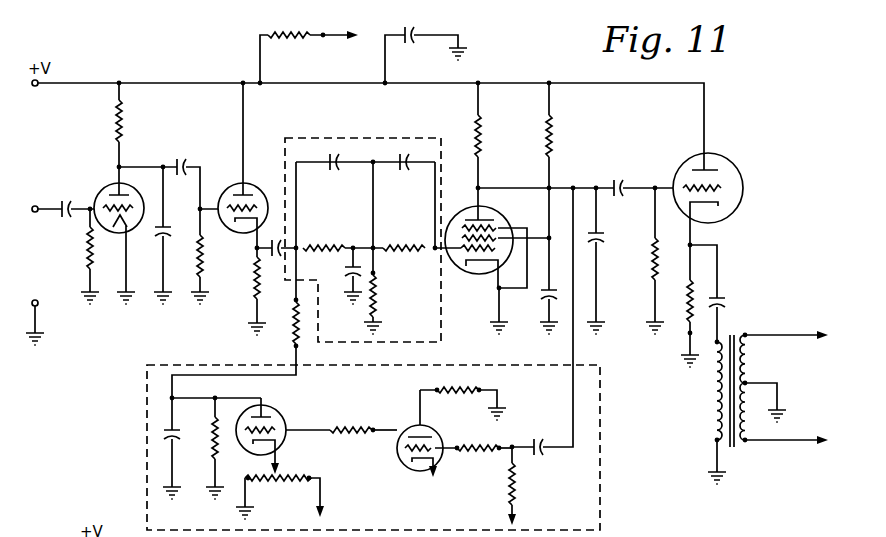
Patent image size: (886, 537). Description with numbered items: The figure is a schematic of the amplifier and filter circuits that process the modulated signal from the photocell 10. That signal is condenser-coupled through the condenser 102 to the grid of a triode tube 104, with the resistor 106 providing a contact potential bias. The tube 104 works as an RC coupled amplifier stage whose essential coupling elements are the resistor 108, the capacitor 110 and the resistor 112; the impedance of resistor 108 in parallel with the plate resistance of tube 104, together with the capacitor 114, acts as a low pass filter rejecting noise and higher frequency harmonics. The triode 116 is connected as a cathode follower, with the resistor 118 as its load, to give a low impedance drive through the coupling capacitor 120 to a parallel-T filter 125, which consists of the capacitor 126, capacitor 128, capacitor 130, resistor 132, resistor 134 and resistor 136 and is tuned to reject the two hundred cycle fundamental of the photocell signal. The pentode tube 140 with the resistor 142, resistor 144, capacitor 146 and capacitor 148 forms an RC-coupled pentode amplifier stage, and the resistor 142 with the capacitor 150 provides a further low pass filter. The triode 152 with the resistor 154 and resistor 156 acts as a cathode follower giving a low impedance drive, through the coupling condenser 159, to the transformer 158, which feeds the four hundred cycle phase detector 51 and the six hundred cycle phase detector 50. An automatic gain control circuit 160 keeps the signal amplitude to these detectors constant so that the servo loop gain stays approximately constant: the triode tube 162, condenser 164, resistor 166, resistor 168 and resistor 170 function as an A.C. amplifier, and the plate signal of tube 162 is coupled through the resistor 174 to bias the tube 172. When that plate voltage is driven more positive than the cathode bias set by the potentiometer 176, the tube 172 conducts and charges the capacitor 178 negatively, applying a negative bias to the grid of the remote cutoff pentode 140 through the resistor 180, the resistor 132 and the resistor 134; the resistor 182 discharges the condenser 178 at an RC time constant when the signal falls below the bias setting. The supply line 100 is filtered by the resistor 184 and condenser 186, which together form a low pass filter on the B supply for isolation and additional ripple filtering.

The photocell 10 is at (55, 191).
The positive supply line 100 is at (125, 78).
The condenser 102 is at (68, 219).
The triode tube 104 is at (124, 190).
The resistor 106 is at (88, 258).
The resistor 108 is at (122, 118).
The capacitor 110 is at (180, 163).
The resistor 112 is at (203, 262).
The capacitor 114 is at (160, 239).
The triode 116 is at (231, 192).
The resistor 118 is at (255, 285).
The capacitor 120 is at (270, 215).
The parallel-T filter 125 is at (349, 138).
The capacitor 126 is at (331, 171).
The capacitor 128 is at (400, 171).
The capacitor 130 is at (346, 270).
The resistor 132 is at (316, 244).
The resistor 134 is at (402, 244).
The resistor 136 is at (378, 291).
The pentode tube 140 is at (493, 216).
The resistor 142 is at (481, 130).
The resistor 144 is at (552, 130).
The capacitor 146 is at (546, 297).
The capacitor 148 is at (617, 178).
The capacitor 150 is at (600, 244).
The triode 152 is at (743, 180).
The resistor 154 is at (652, 270).
The resistor 156 is at (686, 318).
The coupling condenser 159 is at (724, 302).
The transformer 158 is at (737, 338).
The 400 cycle phase detector 51 is at (786, 344).
The 600 cycle phase detector 50 is at (786, 454).
The automatic gain control circuit 160 is at (141, 449).
The triode tube 162 is at (404, 428).
The condenser 164 is at (541, 434).
The resistor 166 is at (446, 392).
The resistor 168 is at (477, 455).
The resistor 170 is at (516, 472).
The tube 172 is at (287, 419).
The resistor 174 is at (339, 437).
The potentiometer 176 is at (298, 484).
The capacitor 178 is at (168, 432).
The resistor 180 is at (290, 344).
The resistor 182 is at (214, 458).
The resistor 184 is at (297, 40).
The condenser 186 is at (420, 33).